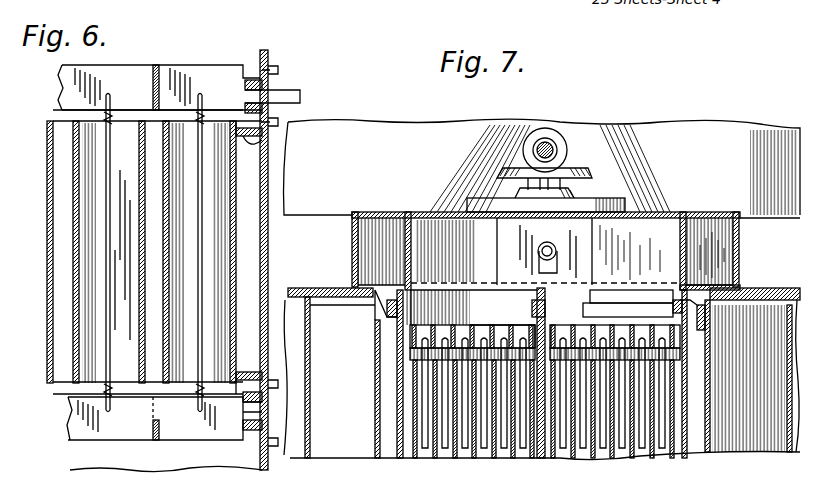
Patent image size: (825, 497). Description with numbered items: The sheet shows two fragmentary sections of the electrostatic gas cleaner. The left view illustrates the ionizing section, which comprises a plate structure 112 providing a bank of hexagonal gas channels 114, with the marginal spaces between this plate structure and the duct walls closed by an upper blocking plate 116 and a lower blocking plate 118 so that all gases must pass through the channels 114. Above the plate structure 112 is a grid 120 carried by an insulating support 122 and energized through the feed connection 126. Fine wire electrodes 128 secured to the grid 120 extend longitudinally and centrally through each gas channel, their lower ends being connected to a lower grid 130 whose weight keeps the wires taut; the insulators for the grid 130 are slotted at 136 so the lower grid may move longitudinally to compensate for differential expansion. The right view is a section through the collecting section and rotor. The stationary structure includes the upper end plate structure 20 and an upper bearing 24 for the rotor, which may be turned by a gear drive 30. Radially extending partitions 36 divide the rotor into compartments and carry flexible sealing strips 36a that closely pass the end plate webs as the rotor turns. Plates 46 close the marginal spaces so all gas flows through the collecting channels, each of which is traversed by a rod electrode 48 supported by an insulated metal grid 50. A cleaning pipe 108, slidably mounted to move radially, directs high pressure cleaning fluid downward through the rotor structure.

In FIG. 7, the upper end plate structure 20 is at (595, 290).
In FIG. 7, the upper bearing 24 is at (578, 192).
In FIG. 7, the gear drive 30 is at (560, 162).
In FIG. 7, the radially extending partition 36 is at (546, 308).
In FIG. 7, the flexible sealing strip 36a is at (540, 300).
In FIG. 7, the blocking plate 46 is at (410, 372).
In FIG. 7, the electrode 48 is at (420, 428).
In FIG. 7, the grid 50 is at (482, 335).
In FIG. 7, the cleaning pipe 108 is at (551, 244).
In FIG. 6, the plate structure 112 is at (232, 160).
In FIG. 6, the gas channel 114 is at (222, 150).
In FIG. 7, the upper blocking plate 116 is at (284, 132).
In FIG. 6, the lower blocking plate 118 is at (248, 370).
In FIG. 6, the grid 120 is at (200, 77).
In FIG. 6, the insulating support 122 is at (280, 74).
In FIG. 6, the feed connection 126 is at (302, 97).
In FIG. 6, the electrode 128 is at (106, 168).
In FIG. 6, the grid 130 is at (75, 432).
In FIG. 6, the slot 136 is at (240, 406).